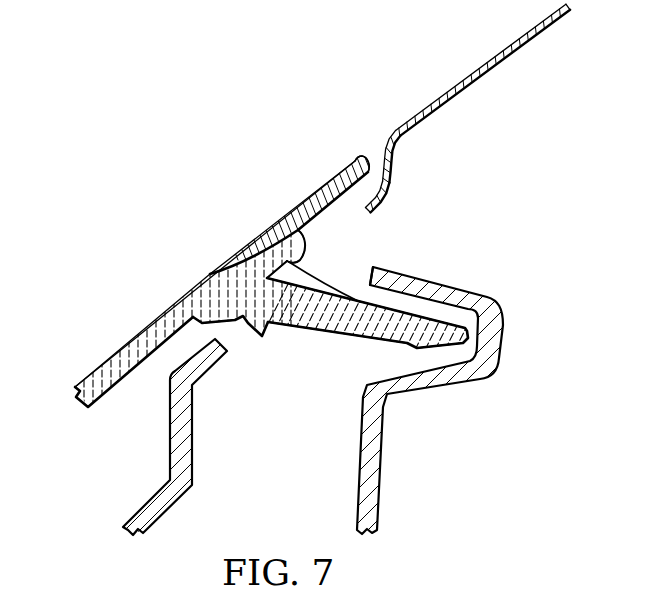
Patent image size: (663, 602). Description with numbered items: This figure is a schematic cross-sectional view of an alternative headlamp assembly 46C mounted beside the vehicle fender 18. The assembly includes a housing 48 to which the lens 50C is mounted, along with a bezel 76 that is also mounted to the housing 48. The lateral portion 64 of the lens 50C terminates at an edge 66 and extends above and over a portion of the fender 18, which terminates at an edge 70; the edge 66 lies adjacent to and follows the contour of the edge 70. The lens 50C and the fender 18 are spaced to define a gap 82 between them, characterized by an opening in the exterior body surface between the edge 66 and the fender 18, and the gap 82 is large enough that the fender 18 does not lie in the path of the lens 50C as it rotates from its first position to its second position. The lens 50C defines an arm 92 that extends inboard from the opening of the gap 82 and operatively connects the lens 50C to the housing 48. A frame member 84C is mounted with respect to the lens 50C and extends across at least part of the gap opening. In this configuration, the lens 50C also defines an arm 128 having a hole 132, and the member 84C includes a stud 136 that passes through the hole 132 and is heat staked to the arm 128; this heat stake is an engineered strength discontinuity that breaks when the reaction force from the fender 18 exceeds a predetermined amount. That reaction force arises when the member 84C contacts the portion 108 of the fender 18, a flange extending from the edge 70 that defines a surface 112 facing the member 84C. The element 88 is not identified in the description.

The fender 18 is at (455, 88).
The edge 70 is at (380, 153).
The portion 108 is at (392, 192).
The headlamp assembly 46C is at (76, 274).
The lens 50C is at (107, 356).
The lateral portion 64 is at (150, 316).
The edge 66 is at (210, 277).
The lower edge portion 88 is at (247, 245).
The arm 128 is at (303, 285).
The stud 136 is at (305, 258).
The arm 92 is at (355, 337).
The frame member 84C is at (290, 210).
The hole 132 is at (298, 205).
The surface 112 is at (363, 156).
The housing 48 is at (505, 327).
The gap 82 is at (375, 251).
The bezel 76 is at (193, 430).